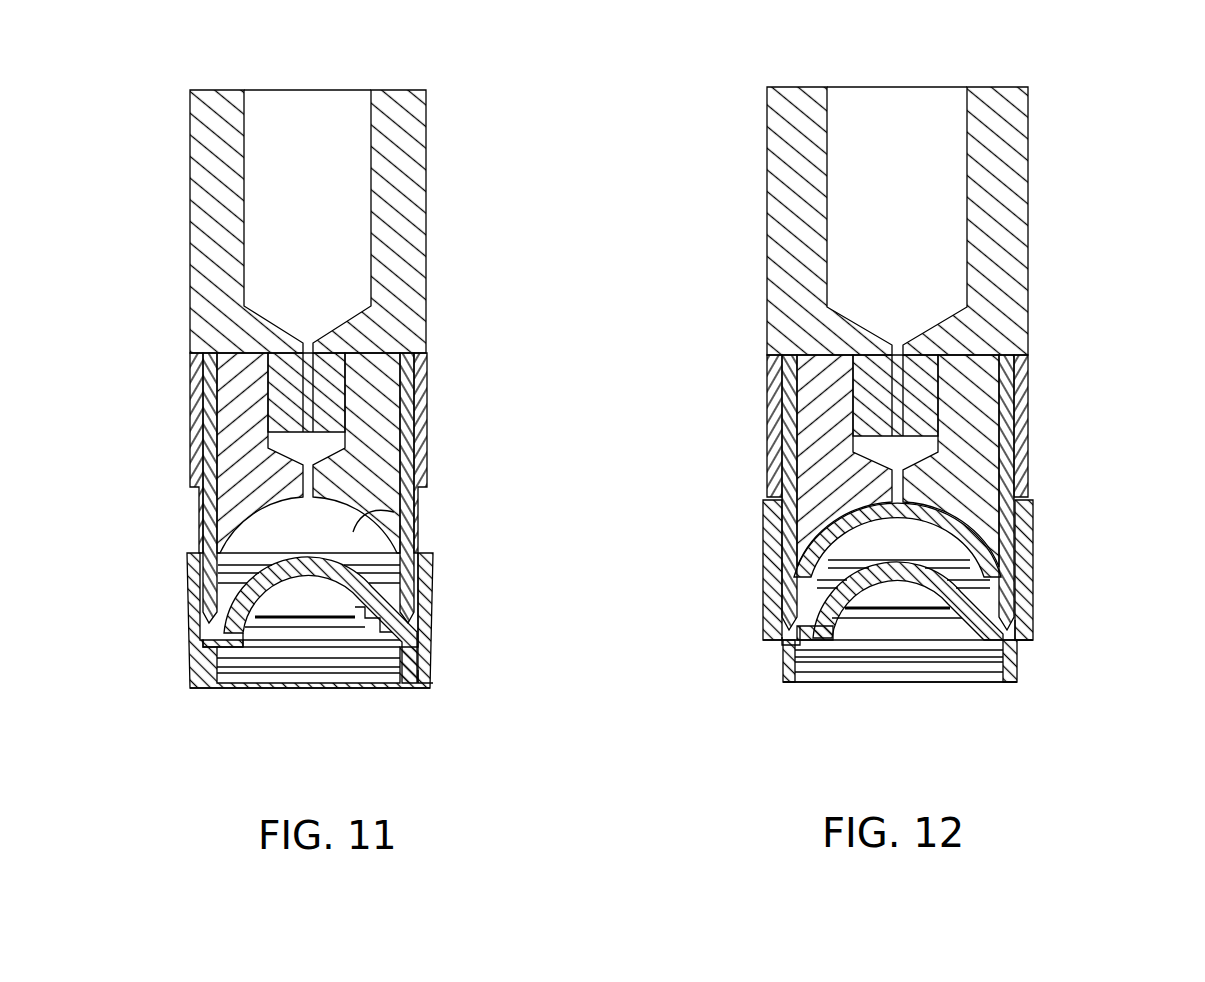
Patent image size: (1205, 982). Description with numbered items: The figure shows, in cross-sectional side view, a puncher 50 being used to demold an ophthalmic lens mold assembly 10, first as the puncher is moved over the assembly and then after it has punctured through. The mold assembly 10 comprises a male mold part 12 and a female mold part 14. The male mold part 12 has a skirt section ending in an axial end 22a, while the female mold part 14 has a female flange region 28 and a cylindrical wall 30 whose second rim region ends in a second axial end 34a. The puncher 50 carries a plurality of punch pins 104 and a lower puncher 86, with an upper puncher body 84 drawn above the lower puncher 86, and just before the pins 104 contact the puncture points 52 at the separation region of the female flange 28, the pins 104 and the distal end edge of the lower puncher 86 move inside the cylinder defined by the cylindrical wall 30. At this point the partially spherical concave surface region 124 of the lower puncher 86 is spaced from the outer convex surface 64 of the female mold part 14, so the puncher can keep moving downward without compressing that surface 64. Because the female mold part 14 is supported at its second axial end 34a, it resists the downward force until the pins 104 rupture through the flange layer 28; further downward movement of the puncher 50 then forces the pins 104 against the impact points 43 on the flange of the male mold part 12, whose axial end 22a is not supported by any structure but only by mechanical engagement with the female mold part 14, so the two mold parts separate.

In FIG. 11, the ophthalmic lens mold assembly 10 is at (173, 616).
In FIG. 11, the male mold part 12 is at (218, 673).
In FIG. 11, the female mold part 14 is at (186, 574).
In FIG. 12, the female mold part 14 is at (762, 528).
In FIG. 11, the axial end 22a is at (409, 690).
In FIG. 12, the axial end 22a is at (825, 684).
In FIG. 11, the female flange region 28 is at (210, 641).
In FIG. 11, the cylindrical wall 30 is at (433, 657).
In FIG. 11, the second axial end 34a is at (431, 690).
In FIG. 12, the second axial end 34a is at (1030, 638).
In FIG. 12, the impact point 43 is at (772, 637).
In FIG. 11, the puncher 50 is at (146, 361).
In FIG. 12, the puncher 50 is at (728, 343).
In FIG. 11, the puncture point 52 is at (424, 612).
In FIG. 11, the outer convex surface 64 is at (402, 592).
In FIG. 11, the reservoir body 84 is at (172, 196).
In FIG. 12, the reservoir body 84 is at (1032, 208).
In FIG. 11, the lower puncher 86 is at (190, 438).
In FIG. 11, the punch pins 104 is at (208, 516).
In FIG. 12, the punch pins 104 is at (1010, 421).
In FIG. 11, the partially spherical concave surface region 124 is at (400, 521).